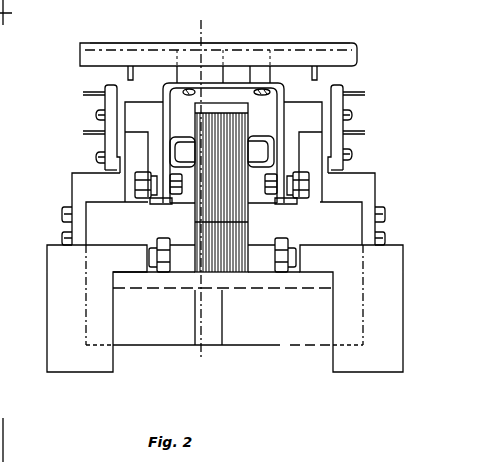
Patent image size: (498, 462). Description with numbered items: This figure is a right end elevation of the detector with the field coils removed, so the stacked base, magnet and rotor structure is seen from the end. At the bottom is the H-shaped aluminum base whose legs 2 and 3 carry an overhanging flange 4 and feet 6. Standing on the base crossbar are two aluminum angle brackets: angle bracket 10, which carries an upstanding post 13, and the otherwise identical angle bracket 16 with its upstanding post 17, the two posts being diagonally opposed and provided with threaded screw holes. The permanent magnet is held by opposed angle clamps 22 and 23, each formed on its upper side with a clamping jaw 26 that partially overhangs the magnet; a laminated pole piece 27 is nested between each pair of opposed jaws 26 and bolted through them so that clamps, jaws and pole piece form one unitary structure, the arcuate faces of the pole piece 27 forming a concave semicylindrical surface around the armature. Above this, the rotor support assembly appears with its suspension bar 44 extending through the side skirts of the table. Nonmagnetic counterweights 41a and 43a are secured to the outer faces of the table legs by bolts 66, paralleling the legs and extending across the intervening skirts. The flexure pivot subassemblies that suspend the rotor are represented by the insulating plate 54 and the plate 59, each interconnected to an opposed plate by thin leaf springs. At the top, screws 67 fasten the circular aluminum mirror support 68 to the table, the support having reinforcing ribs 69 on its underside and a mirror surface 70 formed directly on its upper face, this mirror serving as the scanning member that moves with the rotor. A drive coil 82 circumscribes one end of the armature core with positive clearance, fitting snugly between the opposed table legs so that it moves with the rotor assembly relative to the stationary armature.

The leg 2 is at (55, 291).
The leg 3 is at (395, 307).
The overhanging flange 4 is at (222, 379).
The feet 6 is at (11, 12).
The angle bracket 10 is at (82, 183).
The upstanding post 13 is at (123, 122).
The angle bracket 16 is at (370, 189).
The upstanding post 17 is at (331, 124).
The angle clamp 22 is at (160, 340).
The angle clamp 23 is at (278, 340).
The clamping jaw 26 is at (266, 248).
The laminated pole piece 27 is at (232, 272).
The counterweight 41a is at (163, 204).
The counterweight 43a is at (289, 200).
The suspension bar 44 is at (312, 123).
The plate 54 is at (103, 146).
The plate 59 is at (343, 144).
The bolts 66 is at (309, 188).
The screws 67 is at (287, 80).
The mirror support 68 is at (357, 58).
The reinforcing ribs 69 is at (134, 70).
The mirror surface 70 is at (266, 43).
The drive coil 82 is at (262, 140).